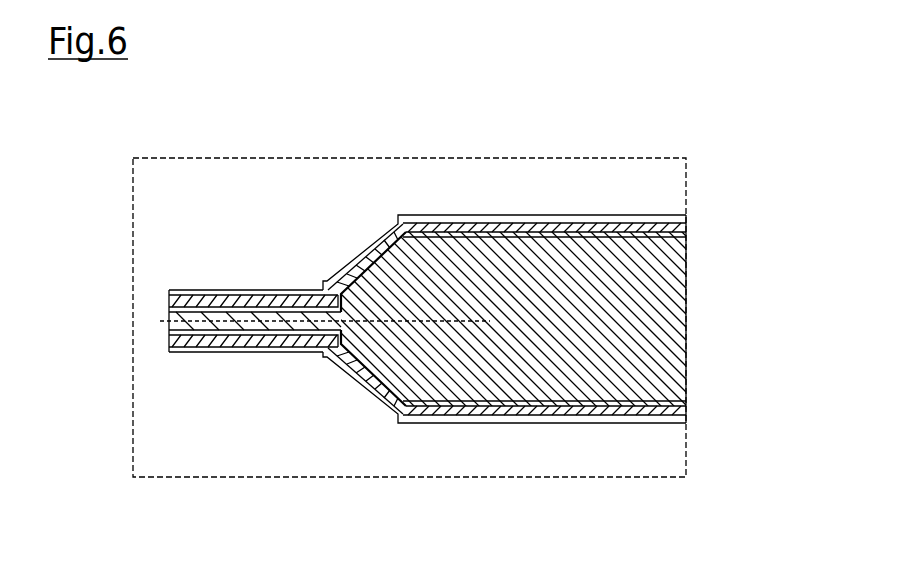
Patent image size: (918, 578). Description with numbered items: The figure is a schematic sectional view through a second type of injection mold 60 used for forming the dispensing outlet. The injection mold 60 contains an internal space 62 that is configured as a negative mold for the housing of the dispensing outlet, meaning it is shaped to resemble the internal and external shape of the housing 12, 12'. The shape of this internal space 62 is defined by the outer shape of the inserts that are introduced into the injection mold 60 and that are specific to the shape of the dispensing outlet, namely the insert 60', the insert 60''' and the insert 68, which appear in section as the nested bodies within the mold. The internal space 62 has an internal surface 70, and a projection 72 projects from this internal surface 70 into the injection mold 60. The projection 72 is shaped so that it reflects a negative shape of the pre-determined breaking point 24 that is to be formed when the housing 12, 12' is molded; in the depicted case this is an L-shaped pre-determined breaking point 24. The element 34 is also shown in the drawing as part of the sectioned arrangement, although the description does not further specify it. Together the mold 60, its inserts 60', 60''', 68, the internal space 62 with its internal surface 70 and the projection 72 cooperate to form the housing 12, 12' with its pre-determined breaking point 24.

The injection mold 60 is at (356, 317).
The insert 60' is at (409, 317).
The insert 60''' is at (508, 318).
The housing 12 is at (563, 319).
The outer housing 12' is at (504, 319).
The internal surface 70 is at (534, 216).
The projection 72 is at (398, 222).
The pre-determined breaking point 24 is at (406, 409).
The internal space 62 is at (597, 422).
The cable upper sheath 34 is at (200, 290).
The insert 68 is at (214, 333).